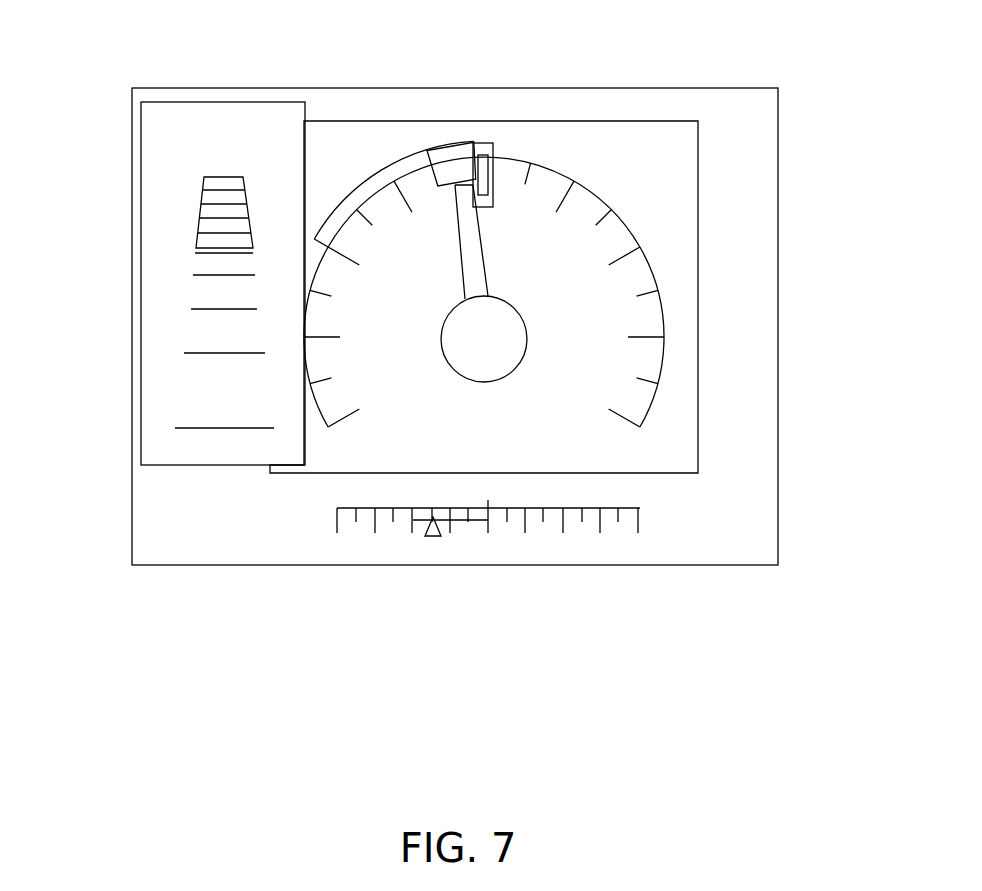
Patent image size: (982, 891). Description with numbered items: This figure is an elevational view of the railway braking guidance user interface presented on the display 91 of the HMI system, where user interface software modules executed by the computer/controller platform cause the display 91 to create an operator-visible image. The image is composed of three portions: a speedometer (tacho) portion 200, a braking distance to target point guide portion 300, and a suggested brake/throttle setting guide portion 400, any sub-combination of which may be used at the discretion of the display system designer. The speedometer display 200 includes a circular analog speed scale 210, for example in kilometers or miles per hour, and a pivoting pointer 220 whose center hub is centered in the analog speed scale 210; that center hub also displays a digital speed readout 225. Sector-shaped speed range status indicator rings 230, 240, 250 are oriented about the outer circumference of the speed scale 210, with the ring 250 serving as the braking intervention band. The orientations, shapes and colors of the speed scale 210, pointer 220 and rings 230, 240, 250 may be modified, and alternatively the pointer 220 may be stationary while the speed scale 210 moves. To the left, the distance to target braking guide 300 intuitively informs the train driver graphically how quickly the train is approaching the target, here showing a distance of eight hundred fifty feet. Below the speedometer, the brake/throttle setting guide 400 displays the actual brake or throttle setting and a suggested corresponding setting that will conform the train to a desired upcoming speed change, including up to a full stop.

The display 91 is at (276, 602).
The speedometer portion 200 is at (310, 78).
The circular analog speed scale 210 is at (623, 217).
The pivoting pointer 220 is at (475, 263).
The digital speed readout 225 is at (487, 360).
The speed range status indicator ring 230 is at (345, 205).
The speed range status indicator ring 240 is at (443, 155).
The braking intervention band 250 is at (490, 147).
The braking distance to target point guide portion 300 is at (115, 103).
The suggested brake/throttle setting guide portion 400 is at (648, 575).